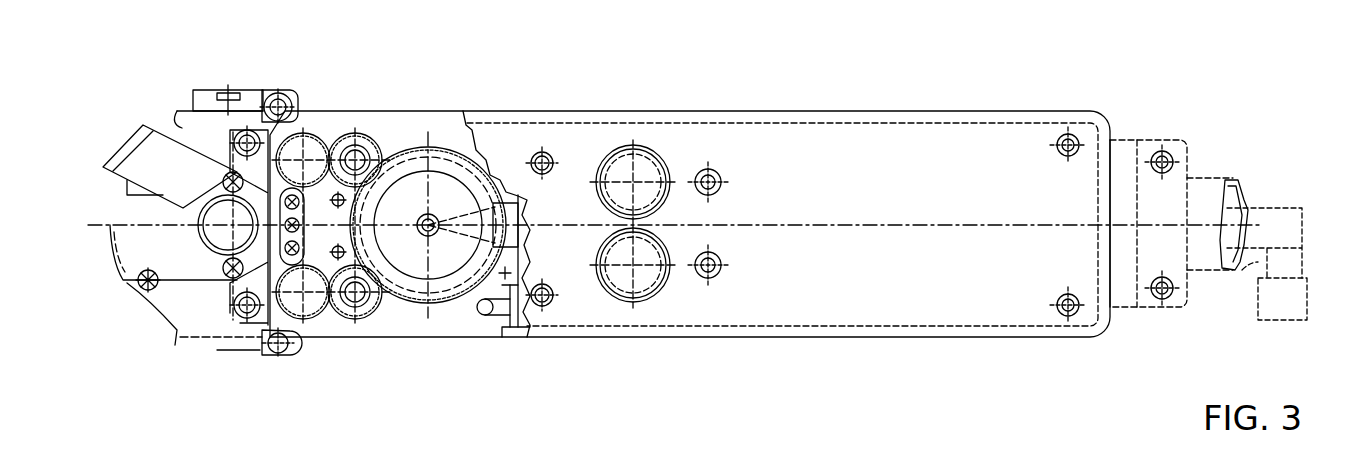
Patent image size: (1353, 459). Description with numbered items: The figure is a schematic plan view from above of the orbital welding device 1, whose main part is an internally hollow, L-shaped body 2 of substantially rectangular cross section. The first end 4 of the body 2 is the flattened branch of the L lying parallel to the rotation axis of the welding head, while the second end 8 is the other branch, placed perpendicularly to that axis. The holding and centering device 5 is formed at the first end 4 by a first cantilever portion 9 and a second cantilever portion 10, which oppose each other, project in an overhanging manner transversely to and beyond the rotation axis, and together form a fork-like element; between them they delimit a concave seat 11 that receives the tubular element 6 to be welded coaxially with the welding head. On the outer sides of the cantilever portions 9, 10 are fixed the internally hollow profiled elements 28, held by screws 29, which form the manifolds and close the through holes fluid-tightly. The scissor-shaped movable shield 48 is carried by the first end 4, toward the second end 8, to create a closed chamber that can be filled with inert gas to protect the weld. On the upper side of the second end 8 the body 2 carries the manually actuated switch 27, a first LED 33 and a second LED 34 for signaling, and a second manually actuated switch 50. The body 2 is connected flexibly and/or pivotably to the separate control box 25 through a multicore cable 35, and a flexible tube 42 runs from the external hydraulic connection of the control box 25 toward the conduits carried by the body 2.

The orbital welding device 1 is at (1225, 115).
The hollow body 2 is at (797, 143).
The first end 4 is at (268, 90).
The holding and centering device 5 is at (174, 344).
The tubular element 6 is at (236, 242).
The second end 8 is at (922, 135).
The first cantilever portion 9 is at (177, 118).
The second cantilever portion 10 is at (160, 310).
The concave seat 11 is at (222, 236).
The control box 25 is at (1298, 303).
The manually actuated switch 27 is at (605, 278).
The profiled elements 28 is at (198, 100).
The screws 29 is at (237, 92).
The first LED 33 is at (707, 255).
The second LED 34 is at (700, 170).
The multicore cable 35 is at (1260, 268).
The flexible tube 42 is at (1283, 207).
The movable shield 48 is at (118, 144).
The second manually actuated switch 50 is at (603, 172).